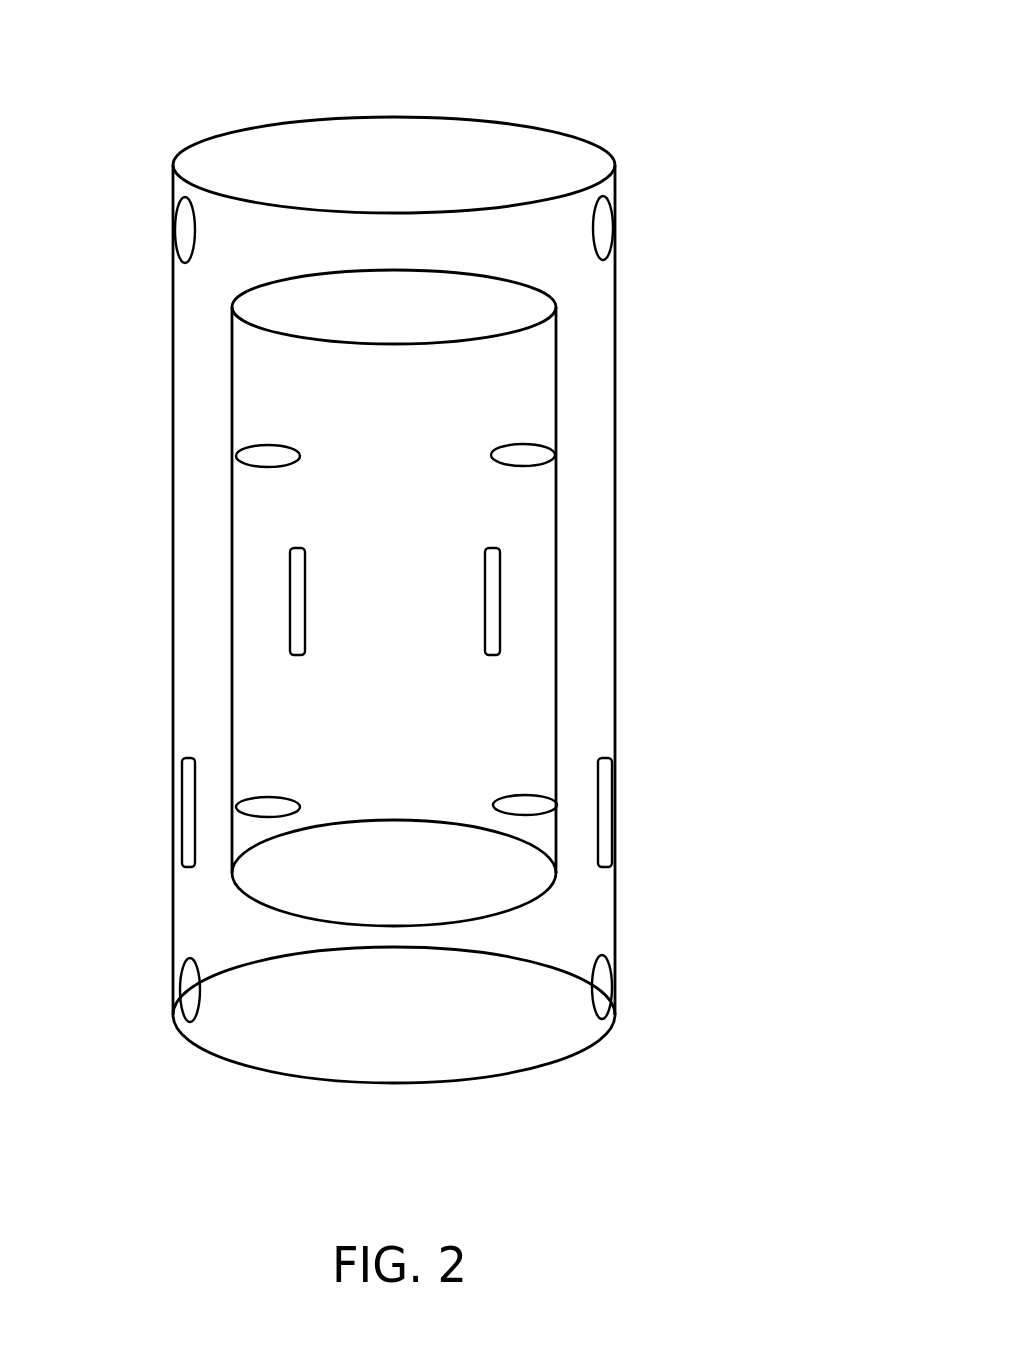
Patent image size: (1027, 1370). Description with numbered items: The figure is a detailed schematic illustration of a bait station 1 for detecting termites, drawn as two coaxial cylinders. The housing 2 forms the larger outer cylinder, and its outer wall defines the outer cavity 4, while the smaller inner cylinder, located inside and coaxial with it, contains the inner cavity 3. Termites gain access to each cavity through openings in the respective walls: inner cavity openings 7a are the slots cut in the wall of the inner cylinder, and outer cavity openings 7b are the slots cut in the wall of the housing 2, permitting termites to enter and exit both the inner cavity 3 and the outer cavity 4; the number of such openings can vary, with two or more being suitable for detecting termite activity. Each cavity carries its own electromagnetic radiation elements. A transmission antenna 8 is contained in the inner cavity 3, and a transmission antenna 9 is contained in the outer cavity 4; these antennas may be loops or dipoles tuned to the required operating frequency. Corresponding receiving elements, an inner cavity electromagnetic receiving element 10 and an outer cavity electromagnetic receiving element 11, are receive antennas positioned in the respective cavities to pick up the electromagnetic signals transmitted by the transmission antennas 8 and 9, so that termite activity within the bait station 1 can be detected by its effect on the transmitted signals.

The bait station 1 is at (173, 95).
The housing 2 is at (617, 336).
The inner cavity 3 is at (265, 695).
The outer cavity 4 is at (205, 480).
The inner cavity openings 7a is at (302, 595).
The outer cavity openings 7b is at (192, 793).
The transmission antenna 8 is at (287, 452).
The transmission antenna 9 is at (189, 222).
The inner cavity electromagnetic receiving element 10 is at (280, 815).
The outer cavity electromagnetic receiving element 11 is at (194, 1000).